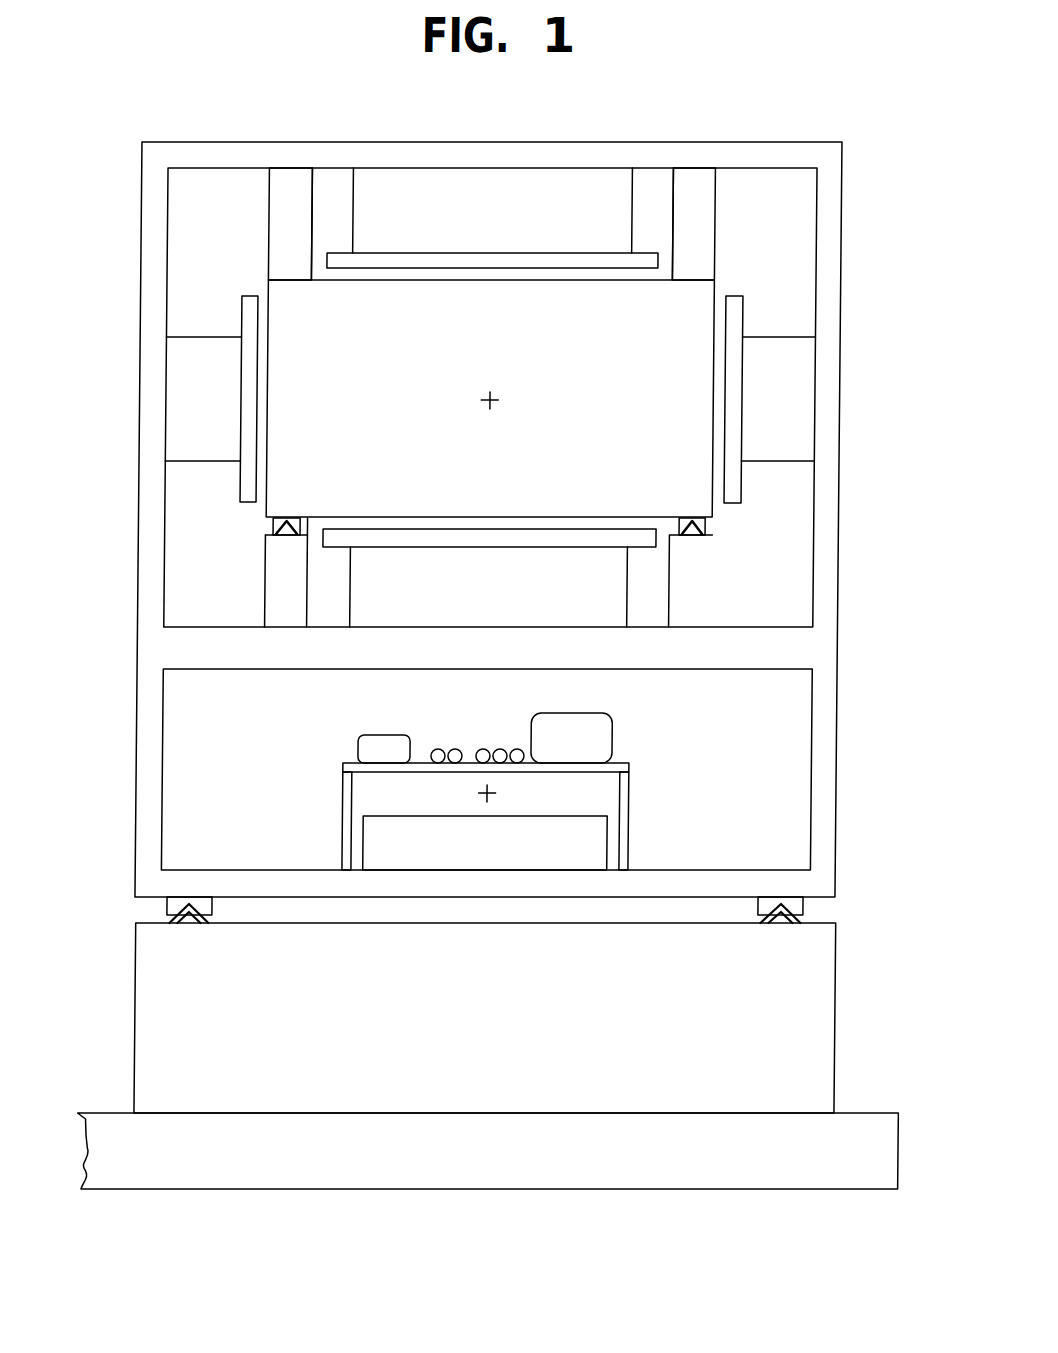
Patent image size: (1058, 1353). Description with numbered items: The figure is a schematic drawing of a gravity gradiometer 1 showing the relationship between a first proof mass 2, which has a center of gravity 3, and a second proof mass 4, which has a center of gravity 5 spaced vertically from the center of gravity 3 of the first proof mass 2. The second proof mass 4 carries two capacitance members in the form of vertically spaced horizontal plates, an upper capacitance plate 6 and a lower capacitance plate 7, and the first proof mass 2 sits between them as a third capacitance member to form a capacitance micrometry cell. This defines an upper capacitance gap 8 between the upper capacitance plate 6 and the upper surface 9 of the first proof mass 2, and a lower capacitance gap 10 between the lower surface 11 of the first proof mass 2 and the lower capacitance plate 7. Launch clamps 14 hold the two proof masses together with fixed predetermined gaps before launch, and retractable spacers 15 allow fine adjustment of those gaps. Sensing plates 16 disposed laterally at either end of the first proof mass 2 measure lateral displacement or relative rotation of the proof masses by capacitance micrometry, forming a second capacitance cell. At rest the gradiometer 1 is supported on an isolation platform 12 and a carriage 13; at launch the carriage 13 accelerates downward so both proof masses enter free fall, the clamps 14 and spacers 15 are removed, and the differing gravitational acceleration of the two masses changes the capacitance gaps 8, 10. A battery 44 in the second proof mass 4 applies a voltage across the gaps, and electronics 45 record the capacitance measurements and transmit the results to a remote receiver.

The gravity gradiometer 1 is at (100, 756).
The first proof mass 2 is at (285, 290).
The center of gravity 3 is at (491, 405).
The second proof mass 4 is at (161, 650).
The center of gravity 5 is at (494, 792).
The upper capacitance plate 6 is at (350, 258).
The lower capacitance plate 7 is at (351, 545).
The upper capacitance gap 8 is at (656, 278).
The upper surface 9 is at (320, 280).
The lower capacitance gap 10 is at (618, 522).
The lower surface 11 is at (320, 517).
The isolation platform 12 is at (822, 966).
The carriage 13 is at (875, 1133).
The launch clamps 14 is at (280, 208).
The retractable spacers 15 is at (278, 531).
The sensing plates 16 is at (248, 311).
The battery 44 is at (607, 744).
The electronics 45 is at (616, 853).